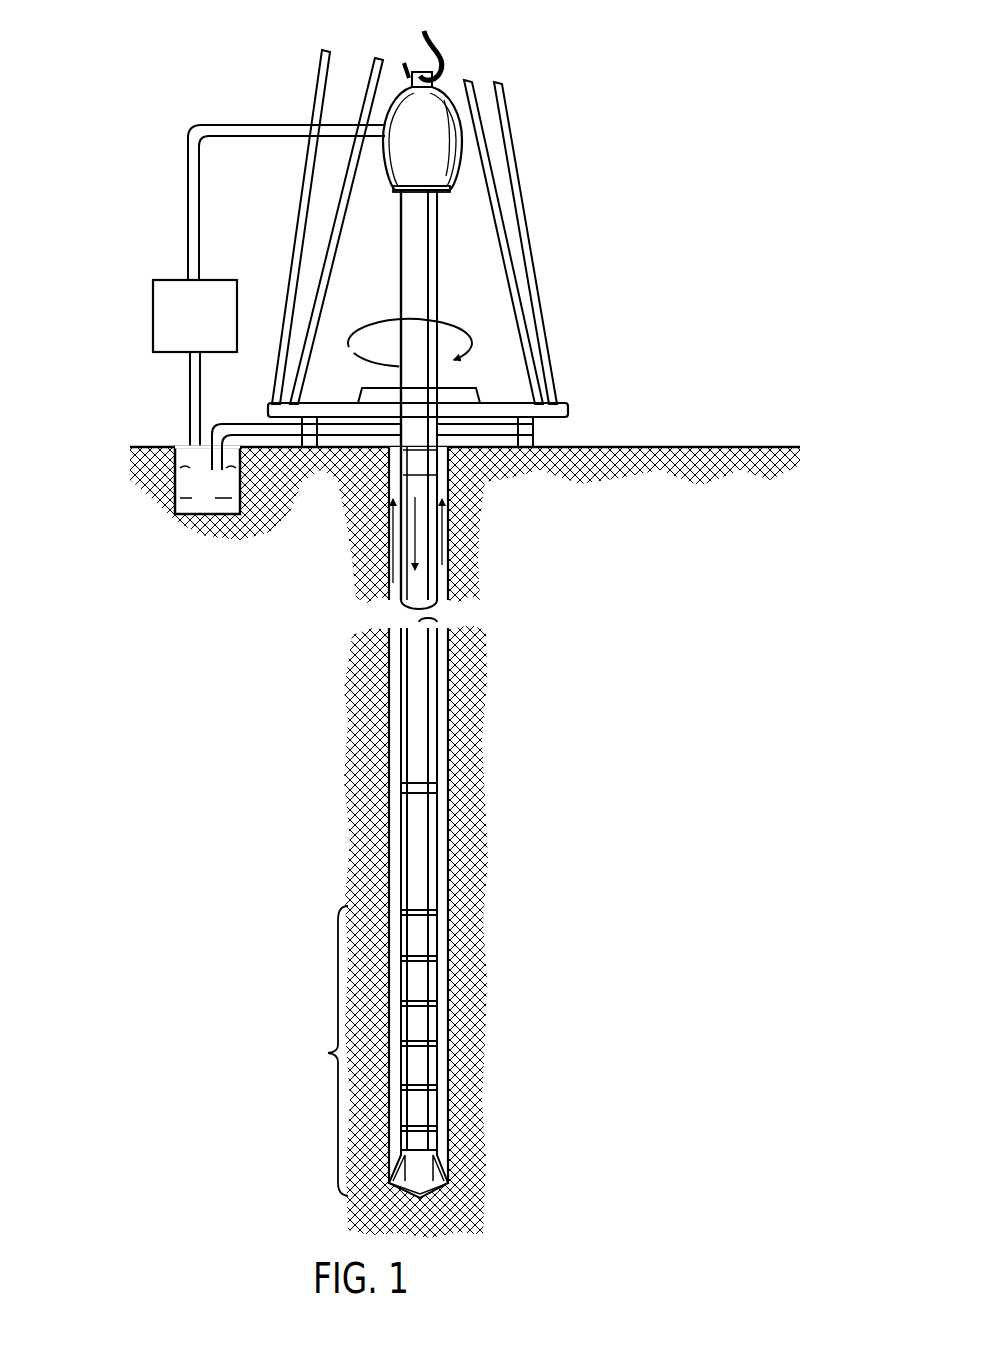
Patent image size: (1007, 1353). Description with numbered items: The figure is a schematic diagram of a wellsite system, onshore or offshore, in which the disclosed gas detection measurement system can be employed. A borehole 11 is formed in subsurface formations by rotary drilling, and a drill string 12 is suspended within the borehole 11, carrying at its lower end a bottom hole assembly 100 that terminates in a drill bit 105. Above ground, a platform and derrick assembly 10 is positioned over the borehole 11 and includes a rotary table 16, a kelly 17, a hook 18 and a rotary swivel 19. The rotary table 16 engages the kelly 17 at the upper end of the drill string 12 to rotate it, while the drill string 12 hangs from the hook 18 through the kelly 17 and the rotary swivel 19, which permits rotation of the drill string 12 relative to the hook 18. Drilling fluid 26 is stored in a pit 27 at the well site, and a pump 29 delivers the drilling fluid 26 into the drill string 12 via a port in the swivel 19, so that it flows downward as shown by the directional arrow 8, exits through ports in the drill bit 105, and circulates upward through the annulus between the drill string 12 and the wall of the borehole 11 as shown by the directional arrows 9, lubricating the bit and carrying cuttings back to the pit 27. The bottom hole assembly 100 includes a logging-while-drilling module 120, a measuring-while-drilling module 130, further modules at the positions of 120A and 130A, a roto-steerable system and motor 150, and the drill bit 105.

The directional arrow 8 is at (410, 555).
The directional arrows 9 is at (386, 530).
The platform and derrick assembly 10 is at (586, 68).
The borehole 11 is at (445, 445).
The drill string 12 is at (417, 432).
The rotary table 16 is at (462, 388).
The kelly 17 is at (403, 343).
The hook 18 is at (432, 42).
The rotary swivel 19 is at (388, 182).
The drilling fluid 26 is at (216, 512).
The pit 27 is at (181, 440).
The pump 29 is at (152, 302).
The bottom hole assembly 100 is at (326, 1052).
The drill bit 105 is at (425, 1172).
The logging-while-drilling module 120 is at (423, 980).
The measuring-while-drilling module 130 is at (423, 1022).
The additional LWD module 120A is at (423, 1062).
The additional MWD module 130A is at (423, 1108).
The roto-steerable system and motor 150 is at (423, 1138).